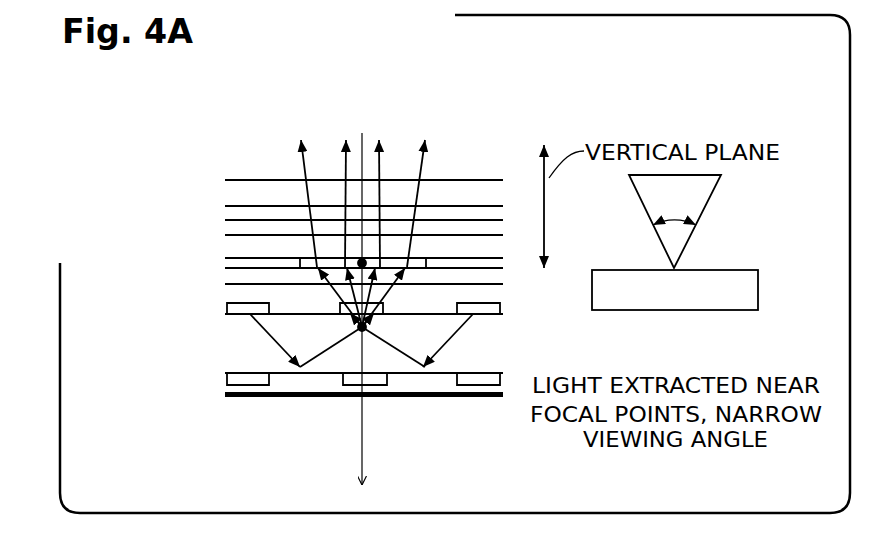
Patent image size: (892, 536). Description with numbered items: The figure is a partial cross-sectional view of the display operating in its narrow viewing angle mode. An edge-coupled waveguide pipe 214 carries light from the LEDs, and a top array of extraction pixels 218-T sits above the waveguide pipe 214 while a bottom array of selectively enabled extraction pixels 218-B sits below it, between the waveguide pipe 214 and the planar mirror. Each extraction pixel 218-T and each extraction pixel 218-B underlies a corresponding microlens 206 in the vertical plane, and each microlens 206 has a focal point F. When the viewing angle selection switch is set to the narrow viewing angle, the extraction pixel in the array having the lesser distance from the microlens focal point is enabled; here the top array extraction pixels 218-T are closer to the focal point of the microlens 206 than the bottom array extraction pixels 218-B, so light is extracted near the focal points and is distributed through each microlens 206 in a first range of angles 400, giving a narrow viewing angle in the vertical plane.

The microlens 206 is at (426, 263).
The edge-coupled waveguide pipe 214 is at (244, 342).
The top array of extraction pixels 218-T is at (242, 308).
The bottom array of selectively enabled extraction pixels 218-B is at (242, 381).
The first range of angles 400 is at (673, 218).